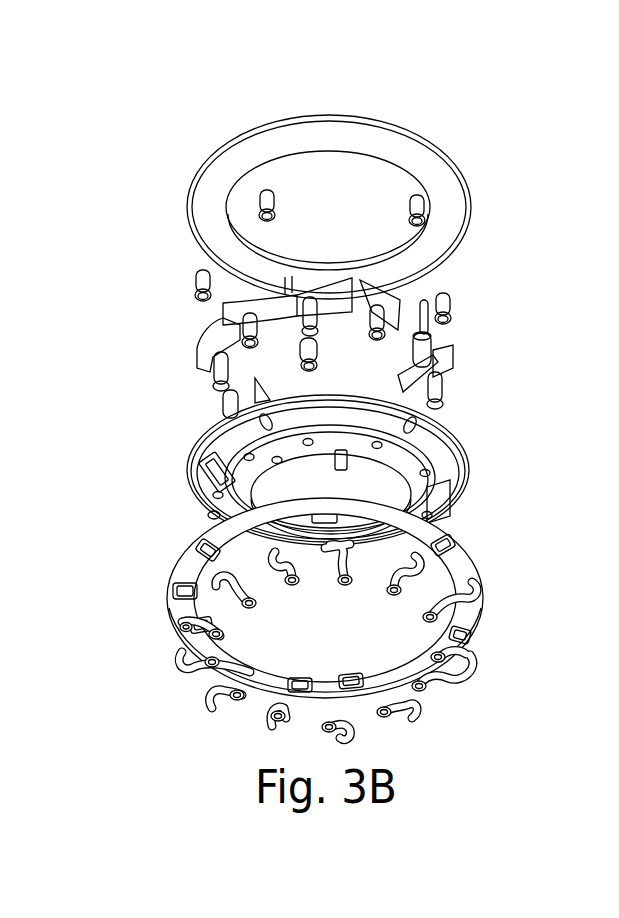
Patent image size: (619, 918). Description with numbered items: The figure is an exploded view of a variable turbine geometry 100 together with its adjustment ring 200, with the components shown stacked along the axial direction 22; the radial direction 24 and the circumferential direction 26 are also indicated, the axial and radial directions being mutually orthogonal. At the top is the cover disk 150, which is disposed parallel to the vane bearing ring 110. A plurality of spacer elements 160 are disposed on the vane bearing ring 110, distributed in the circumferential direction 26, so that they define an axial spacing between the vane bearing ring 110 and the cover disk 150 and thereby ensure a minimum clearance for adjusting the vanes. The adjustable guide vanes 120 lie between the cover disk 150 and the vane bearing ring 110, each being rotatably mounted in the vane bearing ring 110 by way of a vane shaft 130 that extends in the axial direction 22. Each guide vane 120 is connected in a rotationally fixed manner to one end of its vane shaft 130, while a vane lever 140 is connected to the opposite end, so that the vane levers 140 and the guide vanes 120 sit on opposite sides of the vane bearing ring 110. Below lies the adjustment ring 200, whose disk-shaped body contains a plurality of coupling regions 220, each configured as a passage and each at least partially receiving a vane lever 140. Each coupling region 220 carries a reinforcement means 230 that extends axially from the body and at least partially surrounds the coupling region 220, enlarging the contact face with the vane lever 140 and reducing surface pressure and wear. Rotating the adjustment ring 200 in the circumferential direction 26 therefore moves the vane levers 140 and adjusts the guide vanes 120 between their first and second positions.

The variable turbine geometry 100 is at (165, 148).
The axial direction 22 is at (327, 172).
The radial direction 24 is at (330, 85).
The circumferential direction 26 is at (346, 76).
The cover disk 150 is at (412, 158).
The spacer elements 160 is at (441, 290).
The adjustable guide vanes 120 is at (213, 337).
The vane shaft 130 is at (440, 343).
The vane bearing ring 110 is at (462, 452).
The adjustment ring 200 is at (478, 582).
The coupling region 220 is at (460, 548).
The reinforcement means 230 is at (200, 540).
The vane lever 140 is at (477, 637).